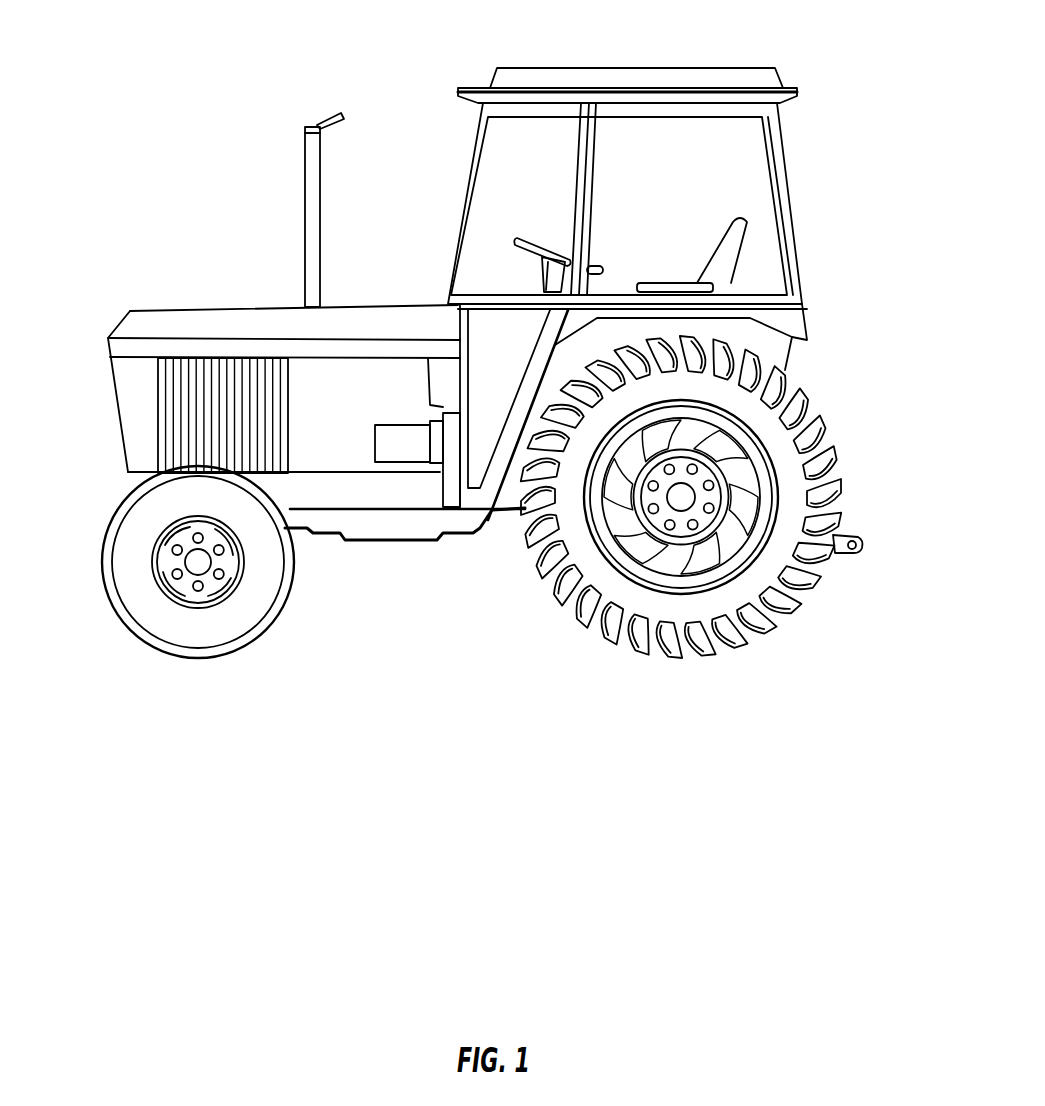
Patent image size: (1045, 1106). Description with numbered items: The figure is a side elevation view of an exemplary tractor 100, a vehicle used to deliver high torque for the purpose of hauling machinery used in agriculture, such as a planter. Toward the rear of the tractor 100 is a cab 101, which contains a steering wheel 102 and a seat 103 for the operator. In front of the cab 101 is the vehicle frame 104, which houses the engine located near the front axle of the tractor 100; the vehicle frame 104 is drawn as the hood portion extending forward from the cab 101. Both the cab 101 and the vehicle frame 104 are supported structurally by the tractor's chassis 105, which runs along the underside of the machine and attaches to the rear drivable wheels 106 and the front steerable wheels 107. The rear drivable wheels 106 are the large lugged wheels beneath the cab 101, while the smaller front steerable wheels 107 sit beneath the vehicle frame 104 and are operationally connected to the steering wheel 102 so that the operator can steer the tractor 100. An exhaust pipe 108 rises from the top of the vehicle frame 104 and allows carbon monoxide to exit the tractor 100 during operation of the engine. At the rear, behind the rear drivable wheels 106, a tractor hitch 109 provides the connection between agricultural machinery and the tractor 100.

The tractor 100 is at (246, 70).
The cab 101 is at (790, 187).
The steering wheel 102 is at (515, 238).
The seat 103 is at (713, 242).
The vehicle frame 104 is at (166, 307).
The chassis 105 is at (388, 542).
The rear drivable wheels 106 is at (818, 417).
The front steerable wheels 107 is at (113, 520).
The exhaust pipe 108 is at (313, 125).
The tractor hitch 109 is at (847, 533).